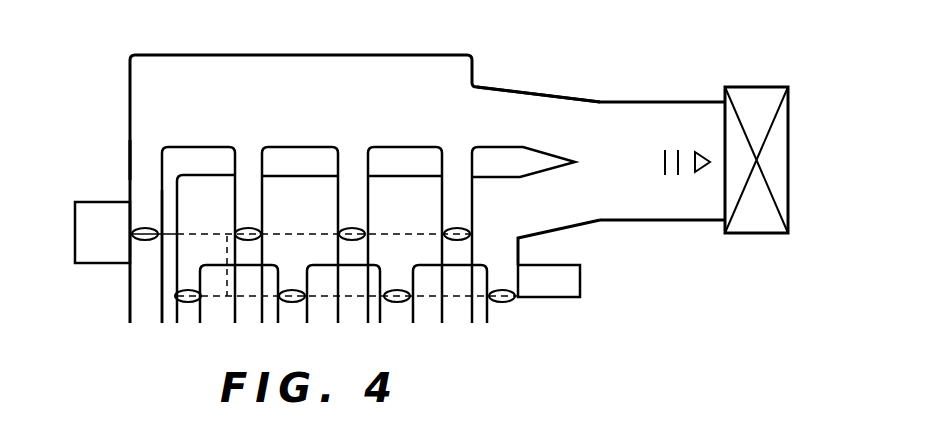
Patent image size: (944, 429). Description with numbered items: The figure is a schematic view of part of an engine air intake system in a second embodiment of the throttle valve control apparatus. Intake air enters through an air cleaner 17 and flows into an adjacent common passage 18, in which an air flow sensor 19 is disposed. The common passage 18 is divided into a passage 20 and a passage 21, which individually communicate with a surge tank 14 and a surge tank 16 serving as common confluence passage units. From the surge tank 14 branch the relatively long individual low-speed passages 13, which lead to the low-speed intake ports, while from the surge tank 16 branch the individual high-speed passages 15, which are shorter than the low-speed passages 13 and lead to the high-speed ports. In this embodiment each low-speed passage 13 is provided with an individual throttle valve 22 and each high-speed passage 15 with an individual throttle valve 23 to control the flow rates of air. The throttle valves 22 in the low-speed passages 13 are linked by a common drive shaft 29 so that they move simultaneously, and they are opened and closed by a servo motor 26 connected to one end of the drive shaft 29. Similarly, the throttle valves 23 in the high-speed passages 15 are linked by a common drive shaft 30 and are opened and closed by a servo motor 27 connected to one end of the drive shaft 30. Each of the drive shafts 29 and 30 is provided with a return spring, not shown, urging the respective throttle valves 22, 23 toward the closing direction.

The low-speed passage 13 is at (130, 160).
The surge tank 14 is at (328, 63).
The high-speed passage 15 is at (168, 272).
The surge tank 16 is at (305, 182).
The air cleaner 17 is at (757, 234).
The common passage 18 is at (680, 222).
The air flow sensor 19 is at (680, 150).
The passage 20 is at (556, 108).
The passage 21 is at (580, 222).
The throttle valve 22 is at (143, 241).
The throttle valve 23 is at (190, 303).
The servo motor 26 is at (75, 207).
The servo motor 27 is at (580, 297).
The drive shaft 29 is at (193, 230).
The drive shaft 30 is at (228, 232).